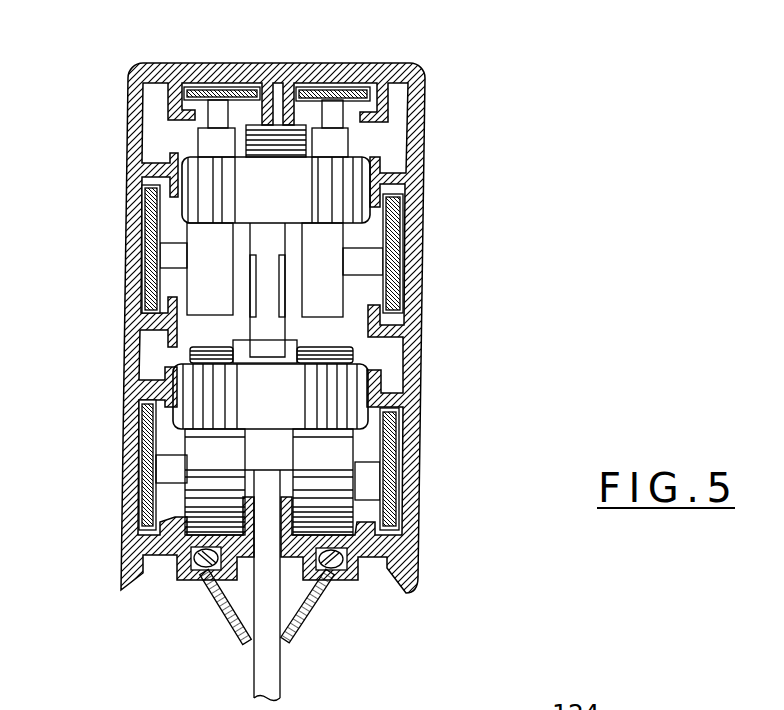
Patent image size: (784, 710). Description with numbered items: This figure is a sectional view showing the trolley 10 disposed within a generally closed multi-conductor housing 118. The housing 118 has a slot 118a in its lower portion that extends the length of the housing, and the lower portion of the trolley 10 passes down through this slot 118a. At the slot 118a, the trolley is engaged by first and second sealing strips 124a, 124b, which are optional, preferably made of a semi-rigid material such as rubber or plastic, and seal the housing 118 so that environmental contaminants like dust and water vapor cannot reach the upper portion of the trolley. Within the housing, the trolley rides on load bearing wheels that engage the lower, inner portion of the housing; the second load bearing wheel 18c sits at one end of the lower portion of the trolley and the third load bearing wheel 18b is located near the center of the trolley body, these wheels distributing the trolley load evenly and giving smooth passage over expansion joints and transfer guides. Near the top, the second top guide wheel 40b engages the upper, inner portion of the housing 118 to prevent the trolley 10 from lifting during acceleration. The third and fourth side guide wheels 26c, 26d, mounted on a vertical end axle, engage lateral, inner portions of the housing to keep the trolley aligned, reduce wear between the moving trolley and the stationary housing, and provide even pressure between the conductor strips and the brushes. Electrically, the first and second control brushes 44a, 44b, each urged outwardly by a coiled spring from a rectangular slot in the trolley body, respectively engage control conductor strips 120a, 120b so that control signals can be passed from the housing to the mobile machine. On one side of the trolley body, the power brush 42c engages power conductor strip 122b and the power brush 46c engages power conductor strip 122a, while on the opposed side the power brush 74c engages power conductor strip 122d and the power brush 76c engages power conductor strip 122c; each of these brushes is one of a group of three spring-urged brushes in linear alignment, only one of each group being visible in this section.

The trolley 10 is at (175, 140).
The housing 118 is at (433, 97).
The slot 118a is at (308, 557).
The control conductor strip 120a is at (222, 93).
The control conductor strip 120b is at (350, 92).
The second top guide wheel 40b is at (283, 126).
The first control brush 44a is at (215, 108).
The second control brush 44b is at (338, 120).
The third side guide wheel 26c is at (336, 177).
The fourth side guide wheel 26d is at (330, 390).
The power brush 46c is at (173, 253).
The power brush 76c is at (373, 262).
The power brush 42c is at (168, 472).
The power brush 74c is at (370, 475).
The power conductor strip 122a is at (156, 271).
The power conductor strip 122b is at (150, 442).
The power conductor strip 122c is at (393, 289).
The power conductor strip 122d is at (387, 503).
The third load bearing wheel 18b is at (233, 362).
The second load bearing wheel 18c is at (352, 356).
The first sealing strip 124a is at (210, 605).
The second sealing strip 124b is at (303, 623).